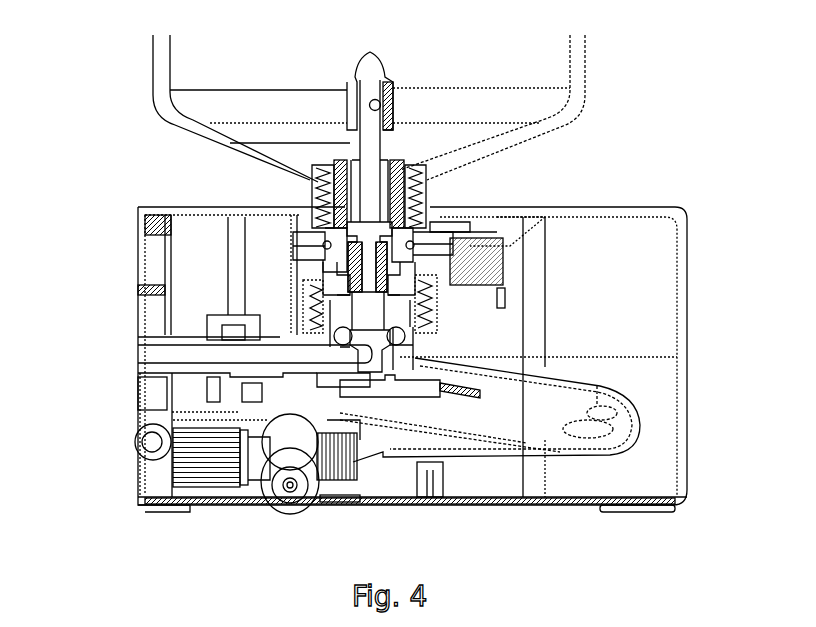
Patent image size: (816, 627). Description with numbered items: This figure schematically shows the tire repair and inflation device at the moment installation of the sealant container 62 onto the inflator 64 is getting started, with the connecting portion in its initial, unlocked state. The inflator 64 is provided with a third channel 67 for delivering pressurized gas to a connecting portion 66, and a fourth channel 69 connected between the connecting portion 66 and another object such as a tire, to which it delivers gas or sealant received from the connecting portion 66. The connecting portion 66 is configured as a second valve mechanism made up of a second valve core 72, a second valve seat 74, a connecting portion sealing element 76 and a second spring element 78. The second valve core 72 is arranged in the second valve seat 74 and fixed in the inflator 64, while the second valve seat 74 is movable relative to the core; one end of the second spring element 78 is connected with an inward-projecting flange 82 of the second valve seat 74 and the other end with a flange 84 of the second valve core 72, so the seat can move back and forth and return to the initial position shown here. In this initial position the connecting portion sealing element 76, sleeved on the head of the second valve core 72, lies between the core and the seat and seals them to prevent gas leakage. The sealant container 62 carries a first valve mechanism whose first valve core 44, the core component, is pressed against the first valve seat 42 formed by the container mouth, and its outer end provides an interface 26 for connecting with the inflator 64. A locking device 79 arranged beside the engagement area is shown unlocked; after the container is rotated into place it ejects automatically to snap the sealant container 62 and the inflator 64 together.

The interface 26 is at (397, 223).
The first valve seat 42 is at (312, 182).
The first valve core 44 is at (353, 131).
The sealant container 62 is at (153, 71).
The inflator 64 is at (138, 290).
The connecting portion 66 is at (295, 262).
The third channel 67 is at (138, 357).
The fourth channel 69 is at (497, 379).
The second valve core 72 is at (450, 263).
The second valve seat 74 is at (430, 283).
The connecting portion sealing element 76 is at (490, 237).
The second spring element 78 is at (330, 288).
The locking device 79 is at (432, 210).
The inward-projecting flange 82 is at (463, 248).
The flange 84 is at (430, 303).